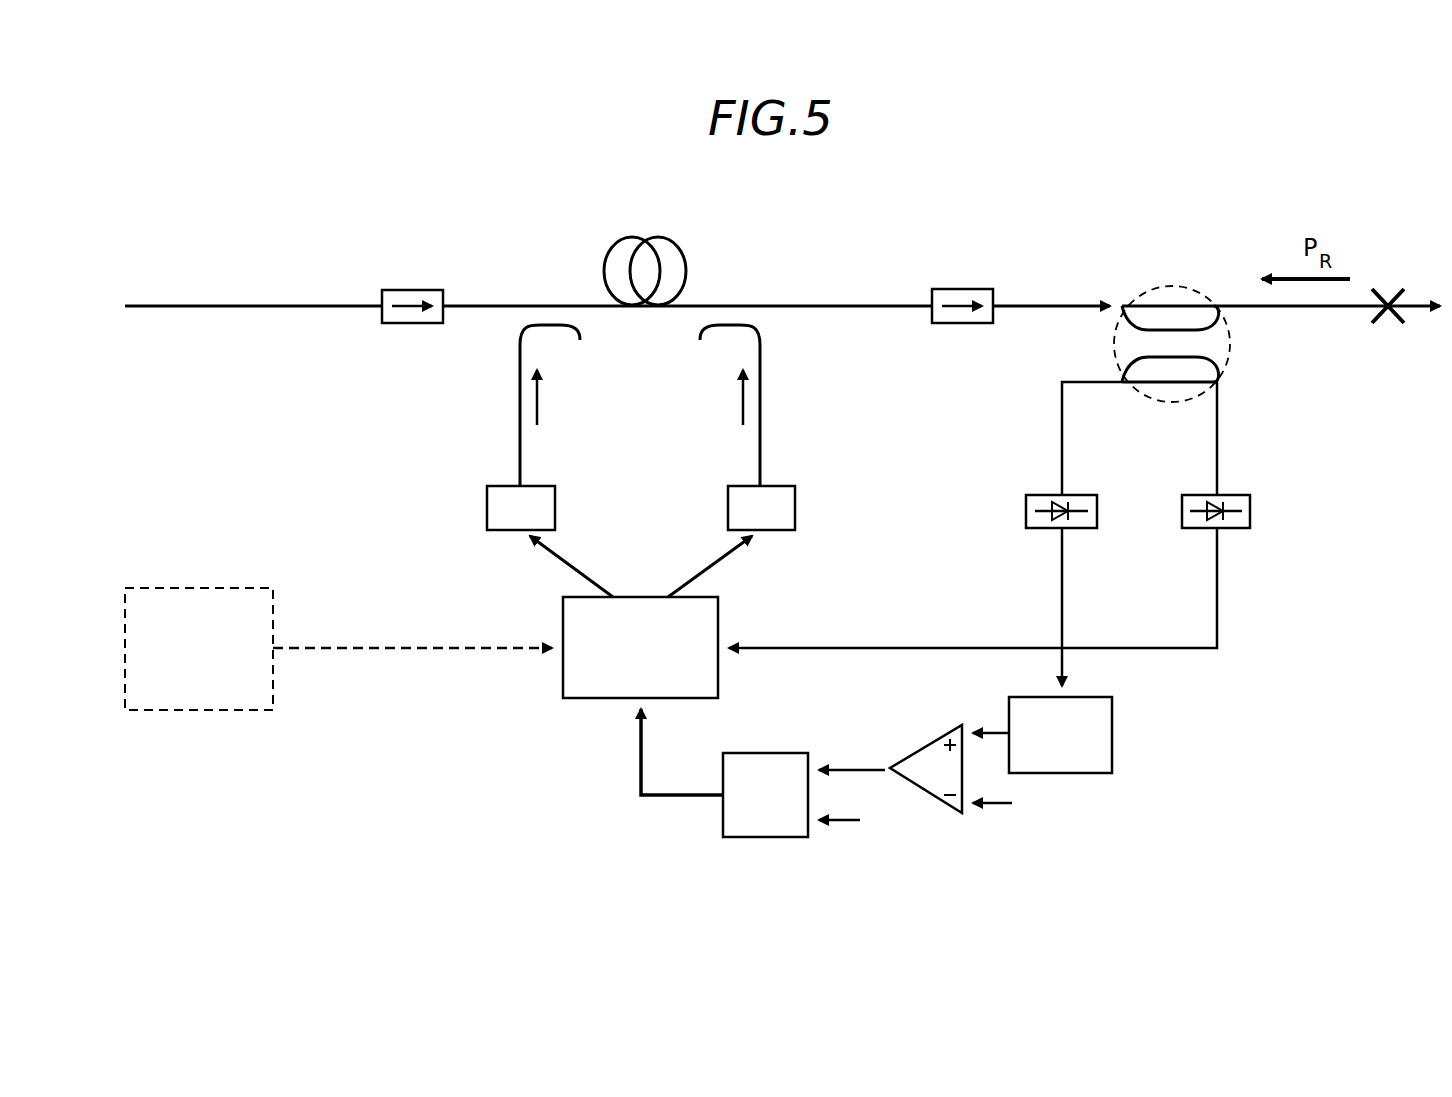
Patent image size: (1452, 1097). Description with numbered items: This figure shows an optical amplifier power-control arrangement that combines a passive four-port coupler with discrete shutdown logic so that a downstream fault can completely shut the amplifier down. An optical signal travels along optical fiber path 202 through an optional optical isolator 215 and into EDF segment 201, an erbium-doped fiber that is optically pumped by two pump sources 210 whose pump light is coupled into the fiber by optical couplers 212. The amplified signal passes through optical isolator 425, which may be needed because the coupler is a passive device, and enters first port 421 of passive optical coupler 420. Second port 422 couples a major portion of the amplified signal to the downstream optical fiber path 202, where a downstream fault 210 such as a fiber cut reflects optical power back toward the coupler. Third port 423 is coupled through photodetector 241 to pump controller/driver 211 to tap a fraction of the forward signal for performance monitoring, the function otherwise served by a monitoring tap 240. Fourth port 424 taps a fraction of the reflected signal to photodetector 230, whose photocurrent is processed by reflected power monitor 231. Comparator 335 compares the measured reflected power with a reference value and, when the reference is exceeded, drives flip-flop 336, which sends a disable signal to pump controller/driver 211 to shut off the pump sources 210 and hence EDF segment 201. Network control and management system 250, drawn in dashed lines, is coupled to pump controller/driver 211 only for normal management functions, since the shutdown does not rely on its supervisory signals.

The EDF segment 201 is at (683, 256).
The optical fiber path 202 is at (252, 302).
The pump sources 210 is at (486, 506).
The pump controller/driver 211 is at (720, 622).
The optical couplers 212 is at (518, 398).
The optical isolator 215 is at (415, 290).
The photodetector 230 is at (1025, 512).
The reflected power monitor 231 is at (1113, 738).
The monitoring tap 240 is at (1219, 446).
The photodetector 241 is at (1251, 511).
The network control and management system 250 is at (200, 711).
The comparator 335 is at (930, 742).
The flip-flop device 336 is at (765, 752).
The passive optical coupler 420 is at (1166, 306).
The first port 421 is at (1126, 328).
The second port 422 is at (1216, 324).
The third port 423 is at (1216, 366).
The fourth port 424 is at (1126, 368).
The optical isolator 425 is at (965, 289).